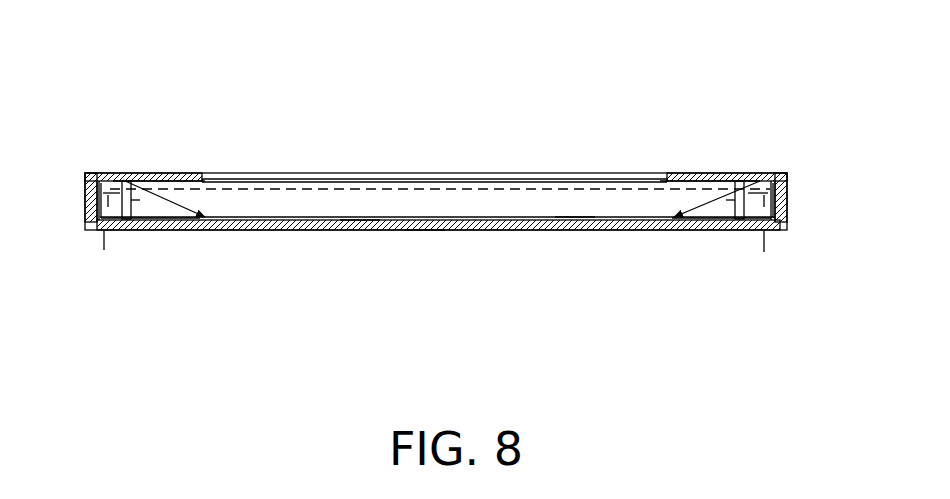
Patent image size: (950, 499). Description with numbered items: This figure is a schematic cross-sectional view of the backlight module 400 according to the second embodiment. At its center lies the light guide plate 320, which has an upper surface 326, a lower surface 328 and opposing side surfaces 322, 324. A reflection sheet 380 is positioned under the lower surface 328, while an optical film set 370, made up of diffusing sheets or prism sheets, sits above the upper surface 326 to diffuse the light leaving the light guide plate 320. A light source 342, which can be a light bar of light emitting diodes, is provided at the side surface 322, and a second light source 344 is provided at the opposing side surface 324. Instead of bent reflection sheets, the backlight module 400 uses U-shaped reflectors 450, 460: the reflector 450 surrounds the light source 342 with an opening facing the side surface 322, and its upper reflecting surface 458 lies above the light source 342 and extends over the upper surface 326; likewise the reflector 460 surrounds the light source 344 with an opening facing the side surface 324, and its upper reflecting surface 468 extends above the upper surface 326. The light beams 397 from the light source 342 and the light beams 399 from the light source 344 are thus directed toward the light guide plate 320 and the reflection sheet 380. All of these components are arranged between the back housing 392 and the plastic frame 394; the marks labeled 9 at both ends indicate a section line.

The backlight module 400 is at (156, 90).
The light source 342 is at (86, 200).
The light source 344 is at (749, 182).
The light guide plate 320 is at (504, 230).
The back housing 392 is at (356, 230).
The lower surface 328 is at (424, 230).
The reflection sheet 380 is at (572, 230).
The upper surface 326 is at (430, 181).
The optical film set 370 is at (498, 184).
The plastic frame 394 is at (176, 178).
The light beams 399 is at (672, 178).
The side surface 322 is at (122, 230).
The side surface 324 is at (738, 230).
The U-shaped reflector 450 is at (96, 176).
The upper reflecting surface 458 is at (130, 180).
The U-shaped reflector 460 is at (732, 184).
The upper reflecting surface 468 is at (797, 190).
The light beams 397 is at (208, 190).
The section line 9 is at (433, 247).